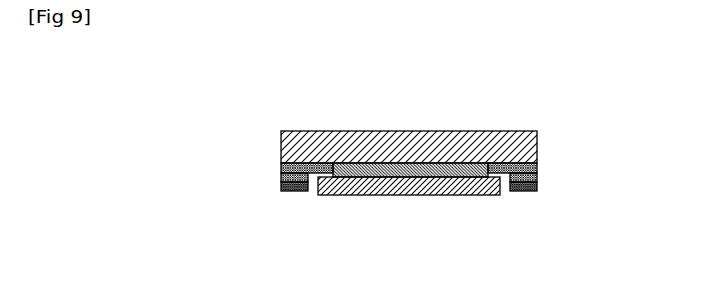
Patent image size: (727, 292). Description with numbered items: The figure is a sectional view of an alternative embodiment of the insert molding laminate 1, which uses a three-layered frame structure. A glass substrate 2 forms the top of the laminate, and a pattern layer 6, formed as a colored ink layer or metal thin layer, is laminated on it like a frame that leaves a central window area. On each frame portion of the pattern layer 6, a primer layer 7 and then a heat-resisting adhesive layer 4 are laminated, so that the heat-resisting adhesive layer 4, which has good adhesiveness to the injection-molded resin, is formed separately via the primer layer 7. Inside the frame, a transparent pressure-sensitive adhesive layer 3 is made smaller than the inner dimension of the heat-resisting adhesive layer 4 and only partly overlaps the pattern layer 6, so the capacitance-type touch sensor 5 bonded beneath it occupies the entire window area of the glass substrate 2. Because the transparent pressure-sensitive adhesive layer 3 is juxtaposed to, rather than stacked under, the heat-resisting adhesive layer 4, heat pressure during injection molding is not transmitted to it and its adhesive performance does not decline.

The insert molding laminate 1 is at (426, 148).
The glass substrate 2 is at (540, 141).
The transparent pressure-sensitive adhesive layer 3 is at (429, 170).
The heat-resisting adhesive layer 4 is at (540, 186).
The capacitance-type touch sensor 5 is at (386, 188).
The pattern layer 6 is at (540, 166).
The primer layer 7 is at (540, 178).